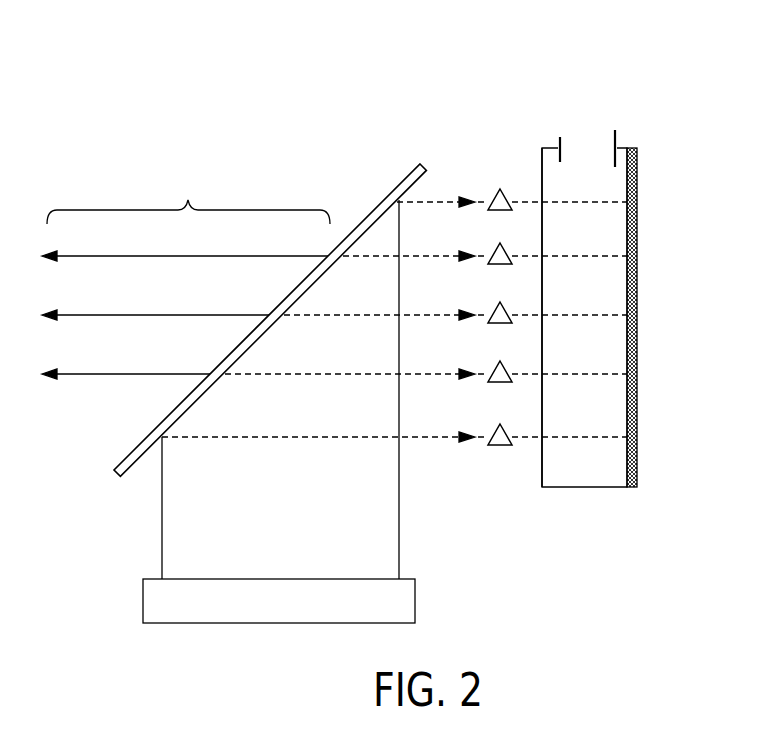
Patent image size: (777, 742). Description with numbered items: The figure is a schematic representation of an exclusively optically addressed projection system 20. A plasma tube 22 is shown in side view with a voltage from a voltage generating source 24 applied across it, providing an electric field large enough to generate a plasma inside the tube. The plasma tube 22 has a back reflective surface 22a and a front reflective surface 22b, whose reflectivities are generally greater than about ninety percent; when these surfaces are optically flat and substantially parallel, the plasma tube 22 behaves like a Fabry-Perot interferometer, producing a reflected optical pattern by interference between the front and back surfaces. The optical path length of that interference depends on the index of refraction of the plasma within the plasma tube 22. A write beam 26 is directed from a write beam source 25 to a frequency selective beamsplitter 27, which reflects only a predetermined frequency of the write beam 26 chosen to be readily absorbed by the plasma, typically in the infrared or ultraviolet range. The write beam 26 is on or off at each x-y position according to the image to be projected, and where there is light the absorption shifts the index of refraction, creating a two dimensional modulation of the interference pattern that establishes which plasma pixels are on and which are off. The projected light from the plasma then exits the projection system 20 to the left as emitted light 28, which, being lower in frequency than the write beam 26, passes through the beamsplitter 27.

The projection system 20 is at (50, 482).
The plasma tube 22 is at (550, 177).
The back reflective surface 22a is at (542, 292).
The front reflective surface 22b is at (635, 427).
The voltage generating source 24 is at (588, 130).
The write beam source 25 is at (415, 600).
The write beam 26 is at (400, 528).
The frequency selective beamsplitter 27 is at (375, 208).
The emitted light 28 is at (78, 207).